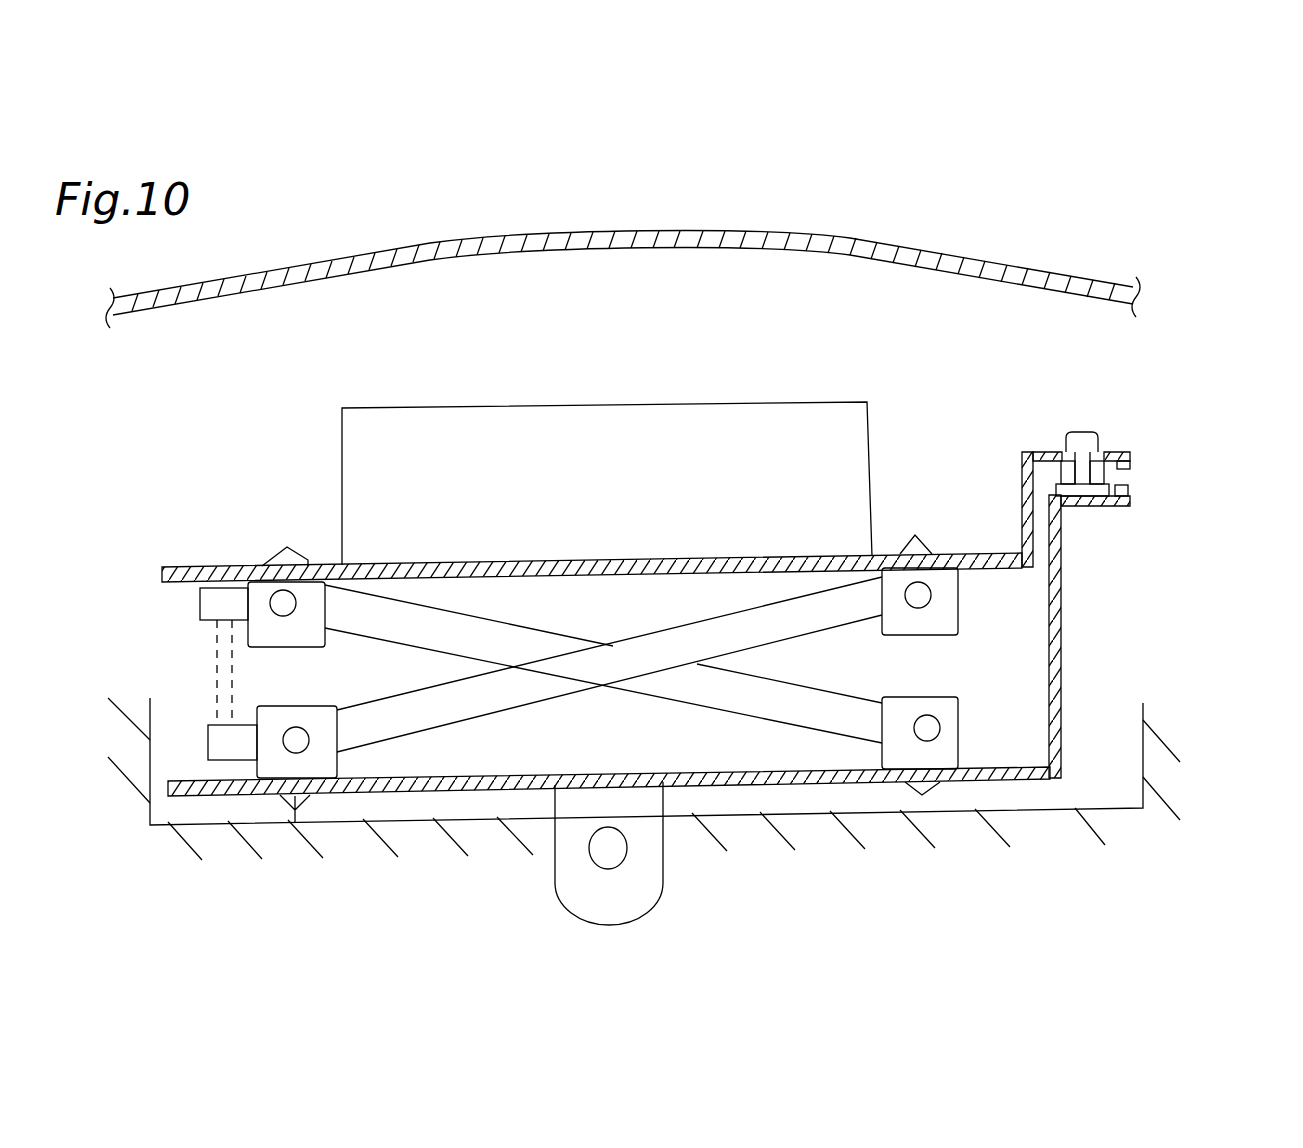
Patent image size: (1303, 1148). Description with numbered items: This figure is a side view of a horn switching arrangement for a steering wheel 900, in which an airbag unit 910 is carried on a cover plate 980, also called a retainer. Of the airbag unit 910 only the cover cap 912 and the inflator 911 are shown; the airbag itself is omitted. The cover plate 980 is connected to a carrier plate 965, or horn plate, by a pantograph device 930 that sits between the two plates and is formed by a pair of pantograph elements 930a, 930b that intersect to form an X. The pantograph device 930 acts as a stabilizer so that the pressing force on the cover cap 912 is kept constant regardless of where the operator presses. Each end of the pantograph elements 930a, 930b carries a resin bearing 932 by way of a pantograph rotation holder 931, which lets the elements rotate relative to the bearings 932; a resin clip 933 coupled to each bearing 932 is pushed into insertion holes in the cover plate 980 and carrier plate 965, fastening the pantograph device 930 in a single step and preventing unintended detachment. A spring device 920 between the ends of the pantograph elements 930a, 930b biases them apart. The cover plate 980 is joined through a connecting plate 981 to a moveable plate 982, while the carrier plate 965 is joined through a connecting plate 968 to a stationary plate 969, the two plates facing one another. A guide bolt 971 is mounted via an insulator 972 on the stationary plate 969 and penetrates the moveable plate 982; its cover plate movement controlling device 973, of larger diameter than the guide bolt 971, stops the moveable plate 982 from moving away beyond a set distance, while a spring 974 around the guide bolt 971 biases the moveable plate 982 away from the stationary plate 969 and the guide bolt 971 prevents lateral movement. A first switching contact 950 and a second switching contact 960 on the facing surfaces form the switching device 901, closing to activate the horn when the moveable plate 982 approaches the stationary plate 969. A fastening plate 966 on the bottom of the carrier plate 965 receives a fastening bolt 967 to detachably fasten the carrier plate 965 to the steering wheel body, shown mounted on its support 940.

The steering wheel 900 is at (1192, 658).
The switching device 901 is at (1108, 395).
The airbag unit 910 is at (1050, 201).
The inflator 911 is at (597, 445).
The cover cap 912 is at (1045, 276).
The spring device 920 is at (207, 656).
The pantograph device 930 is at (603, 663).
The pantograph element 930a is at (528, 642).
The pantograph element 930b is at (713, 635).
The pantograph rotation holder 931 is at (194, 749).
The bearing 932 is at (258, 592).
The clip 933 is at (277, 556).
The support surface 940 is at (1147, 833).
The first switching contact 950 is at (1133, 465).
The second switching contact 960 is at (1130, 490).
The carrier plate 965 is at (410, 796).
The fastening plate 966 is at (578, 870).
The fastening bolt 967 is at (610, 855).
The connecting plate 968 is at (1062, 650).
The stationary plate 969 is at (1078, 506).
The guide bolt 971 is at (1082, 464).
The insulator 972 is at (1090, 497).
The cover plate movement controlling device 973 is at (1075, 432).
The spring 974 is at (1030, 473).
The cover plate 980 is at (393, 565).
The connecting plate 981 is at (1027, 505).
The moveable plate 982 is at (1130, 457).